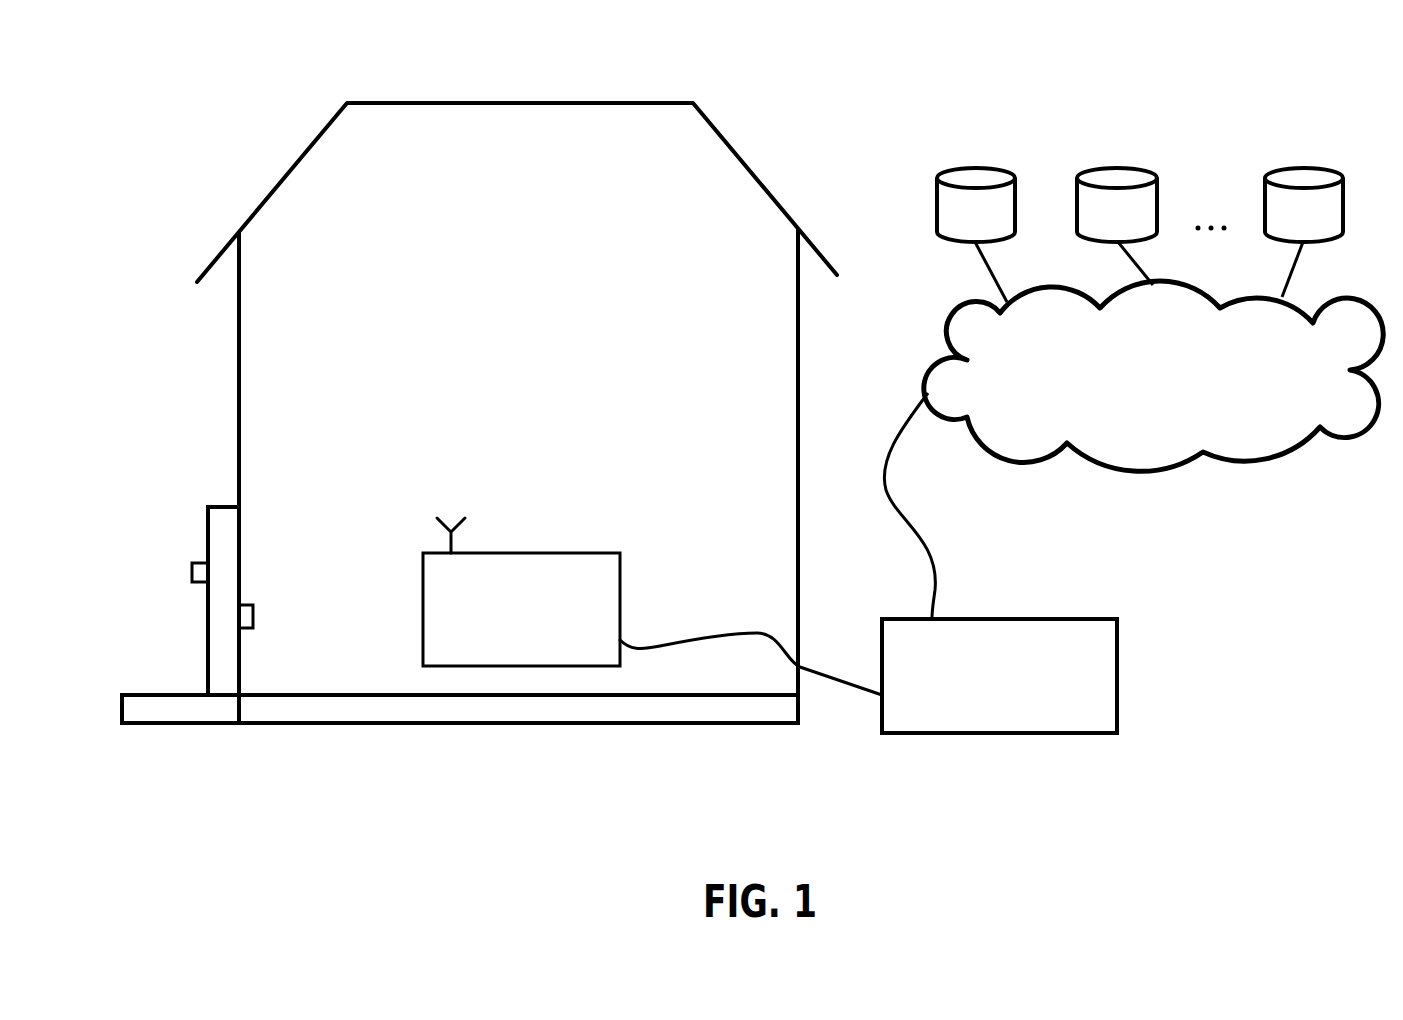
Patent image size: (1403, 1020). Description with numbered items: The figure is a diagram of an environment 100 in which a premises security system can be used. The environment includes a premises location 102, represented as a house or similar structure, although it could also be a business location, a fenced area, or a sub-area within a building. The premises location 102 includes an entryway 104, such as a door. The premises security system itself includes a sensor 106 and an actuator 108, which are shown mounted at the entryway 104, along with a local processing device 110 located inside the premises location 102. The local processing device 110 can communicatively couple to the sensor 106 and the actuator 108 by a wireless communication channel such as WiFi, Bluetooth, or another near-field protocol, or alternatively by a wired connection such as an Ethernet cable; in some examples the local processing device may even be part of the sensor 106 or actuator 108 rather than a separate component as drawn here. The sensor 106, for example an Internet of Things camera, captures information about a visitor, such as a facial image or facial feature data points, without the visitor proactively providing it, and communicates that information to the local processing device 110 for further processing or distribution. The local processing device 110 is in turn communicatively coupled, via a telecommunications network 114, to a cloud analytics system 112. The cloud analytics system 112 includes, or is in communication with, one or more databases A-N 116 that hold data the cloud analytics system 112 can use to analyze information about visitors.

The environment 100 is at (712, 67).
The premises location 102 is at (287, 175).
The entryway 104 is at (208, 507).
The sensor 106 is at (192, 582).
The actuator 108 is at (253, 628).
The local processing device 110 is at (537, 553).
The cloud analytics system 112 is at (1153, 470).
The telecommunications network 114 is at (1082, 619).
The databases A-N 116 is at (1069, 143).